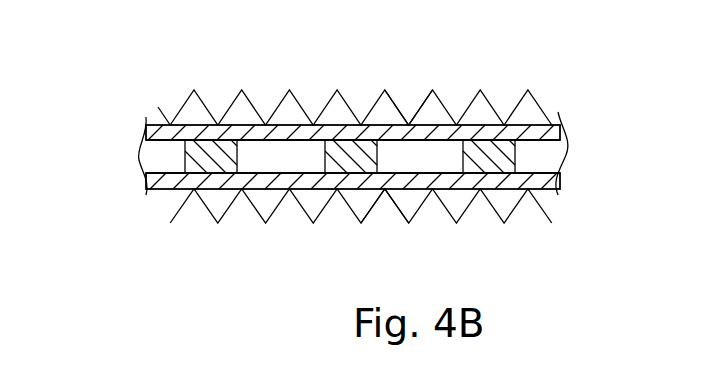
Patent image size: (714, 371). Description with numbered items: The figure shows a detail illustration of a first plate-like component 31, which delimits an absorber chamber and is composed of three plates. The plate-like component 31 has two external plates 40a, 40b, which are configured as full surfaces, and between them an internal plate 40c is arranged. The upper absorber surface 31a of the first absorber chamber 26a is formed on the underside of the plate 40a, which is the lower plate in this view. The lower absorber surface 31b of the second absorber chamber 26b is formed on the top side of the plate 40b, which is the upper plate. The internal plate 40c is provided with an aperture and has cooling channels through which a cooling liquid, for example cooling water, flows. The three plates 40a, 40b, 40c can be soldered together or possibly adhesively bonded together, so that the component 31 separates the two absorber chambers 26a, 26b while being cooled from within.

The first plate-like component 31 is at (114, 103).
The external plate 40b is at (160, 127).
The external plate 40a is at (163, 190).
The internal plate 40c is at (353, 152).
The lower absorber surface 31b is at (292, 113).
The upper absorber surface 31a is at (310, 195).
The second absorber chamber 26b is at (401, 104).
The first absorber chamber 26a is at (378, 217).